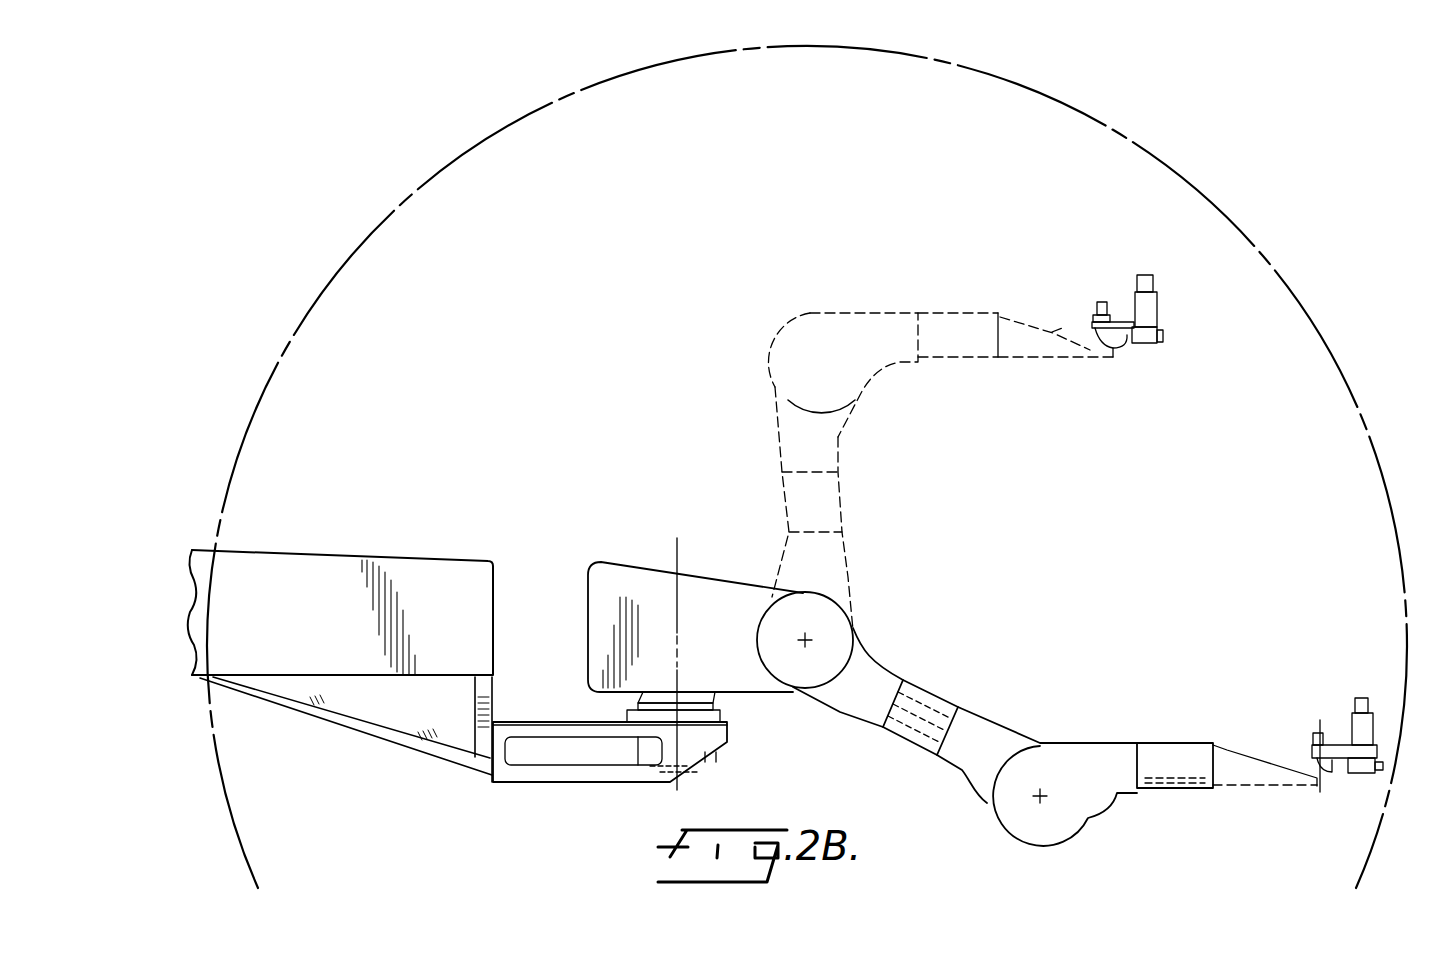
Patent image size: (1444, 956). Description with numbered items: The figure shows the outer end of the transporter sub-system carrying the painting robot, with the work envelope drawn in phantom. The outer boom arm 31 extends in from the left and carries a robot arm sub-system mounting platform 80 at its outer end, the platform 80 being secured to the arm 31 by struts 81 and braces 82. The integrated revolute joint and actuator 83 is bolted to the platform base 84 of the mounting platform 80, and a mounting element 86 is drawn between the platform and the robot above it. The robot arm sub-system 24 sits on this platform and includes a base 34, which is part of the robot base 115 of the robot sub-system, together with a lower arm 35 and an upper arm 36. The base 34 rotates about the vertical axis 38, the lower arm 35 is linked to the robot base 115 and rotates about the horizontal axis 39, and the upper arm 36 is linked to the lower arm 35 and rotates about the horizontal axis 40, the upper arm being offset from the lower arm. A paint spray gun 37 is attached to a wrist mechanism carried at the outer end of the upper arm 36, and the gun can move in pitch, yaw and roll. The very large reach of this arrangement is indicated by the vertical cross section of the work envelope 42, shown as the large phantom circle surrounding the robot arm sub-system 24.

The robot arm sub-system 24 is at (908, 646).
The outer boom arm 31 is at (392, 565).
The base 34 is at (741, 546).
The lower arm 35 is at (932, 698).
The upper arm 36 is at (1188, 784).
The paint spray gun 37 is at (1357, 708).
The vertical axis 38 is at (677, 545).
The horizontal axis 39 is at (806, 640).
The horizontal axis 40 is at (1040, 800).
The work envelope 42 is at (1147, 152).
The robot arm sub-system mounting platform 80 is at (562, 783).
The struts 81 is at (493, 712).
The braces 82 is at (386, 733).
The integrated revolute joint and actuator 83 is at (720, 755).
The platform base 84 is at (577, 722).
The mounting plate 86 is at (722, 714).
The robot base 115 is at (587, 618).